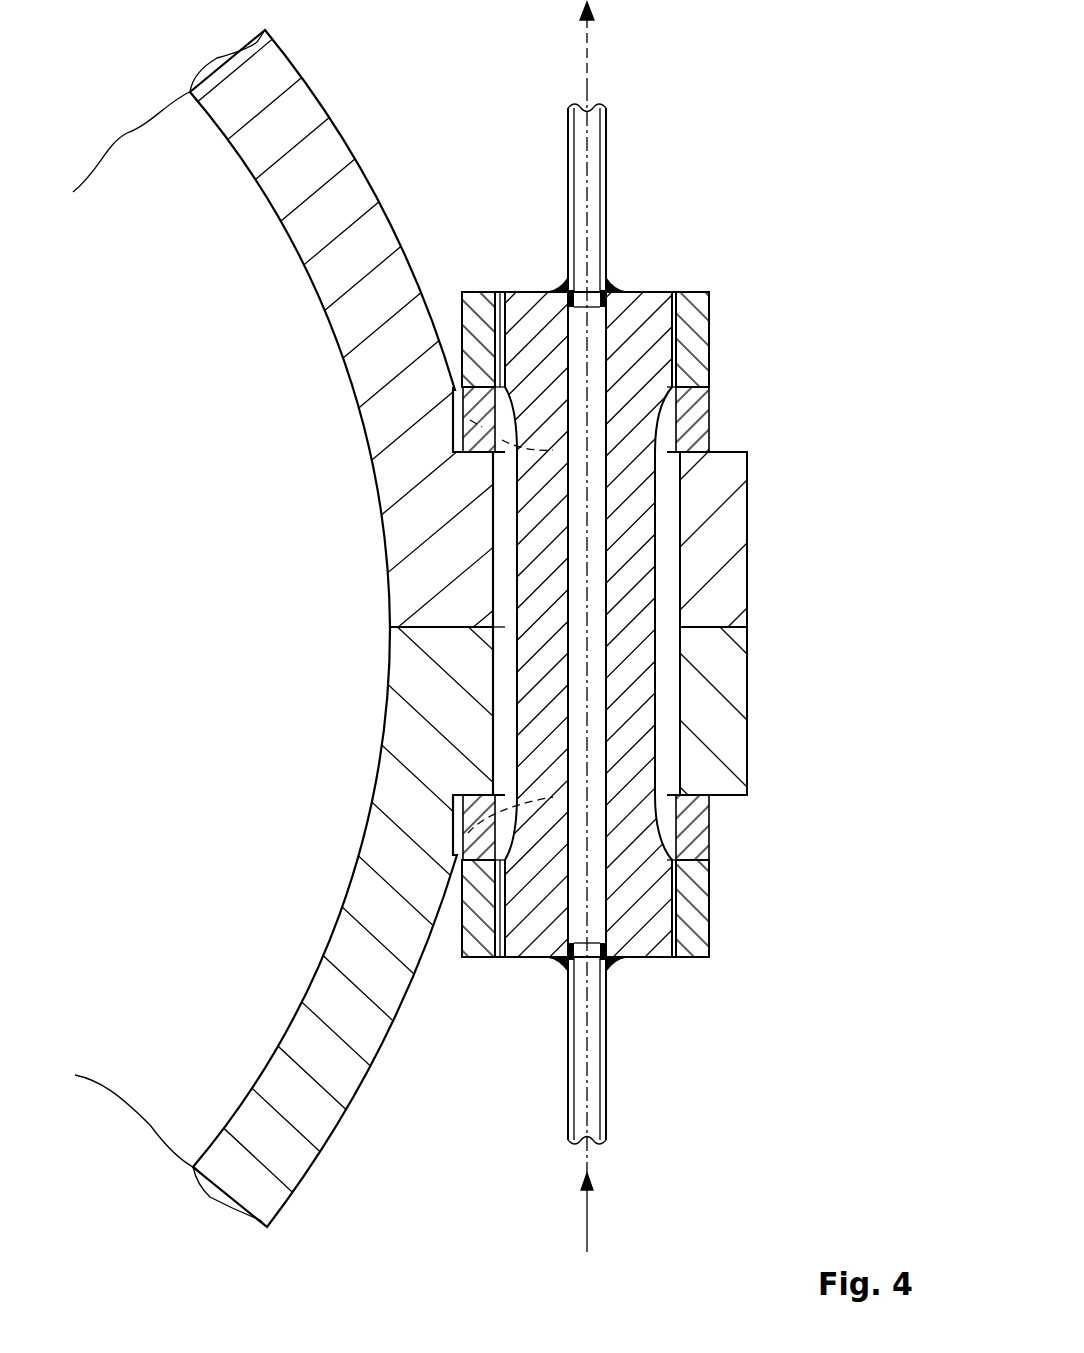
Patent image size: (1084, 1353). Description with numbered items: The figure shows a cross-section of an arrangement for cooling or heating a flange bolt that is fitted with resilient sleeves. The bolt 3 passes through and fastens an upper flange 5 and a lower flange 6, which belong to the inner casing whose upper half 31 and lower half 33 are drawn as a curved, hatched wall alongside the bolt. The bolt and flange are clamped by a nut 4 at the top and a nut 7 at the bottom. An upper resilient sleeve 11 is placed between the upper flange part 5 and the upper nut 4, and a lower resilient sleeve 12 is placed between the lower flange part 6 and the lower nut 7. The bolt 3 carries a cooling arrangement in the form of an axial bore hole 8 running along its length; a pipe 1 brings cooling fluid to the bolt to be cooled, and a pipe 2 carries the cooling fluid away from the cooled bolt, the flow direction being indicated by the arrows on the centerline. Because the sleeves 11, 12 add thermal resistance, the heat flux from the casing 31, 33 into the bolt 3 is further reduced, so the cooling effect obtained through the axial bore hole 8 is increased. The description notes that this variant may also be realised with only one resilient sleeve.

The pipe for cooling fluid to flow to the bolt 1 is at (593, 1028).
The pipe for cooling fluid to flow away from the bolt 2 is at (592, 220).
The bolt 3 is at (633, 580).
The nut 4 is at (690, 323).
The upper flange 5 is at (712, 500).
The lower flange 6 is at (722, 742).
The nut 7 is at (692, 925).
The axial bore hole in flange bolt 8 is at (593, 662).
The upper resilient sleeve 11 is at (690, 417).
The lower resilient sleeve 12 is at (692, 832).
The inner casing, upper half 31 is at (355, 262).
The inner casing, lower half 33 is at (357, 1023).